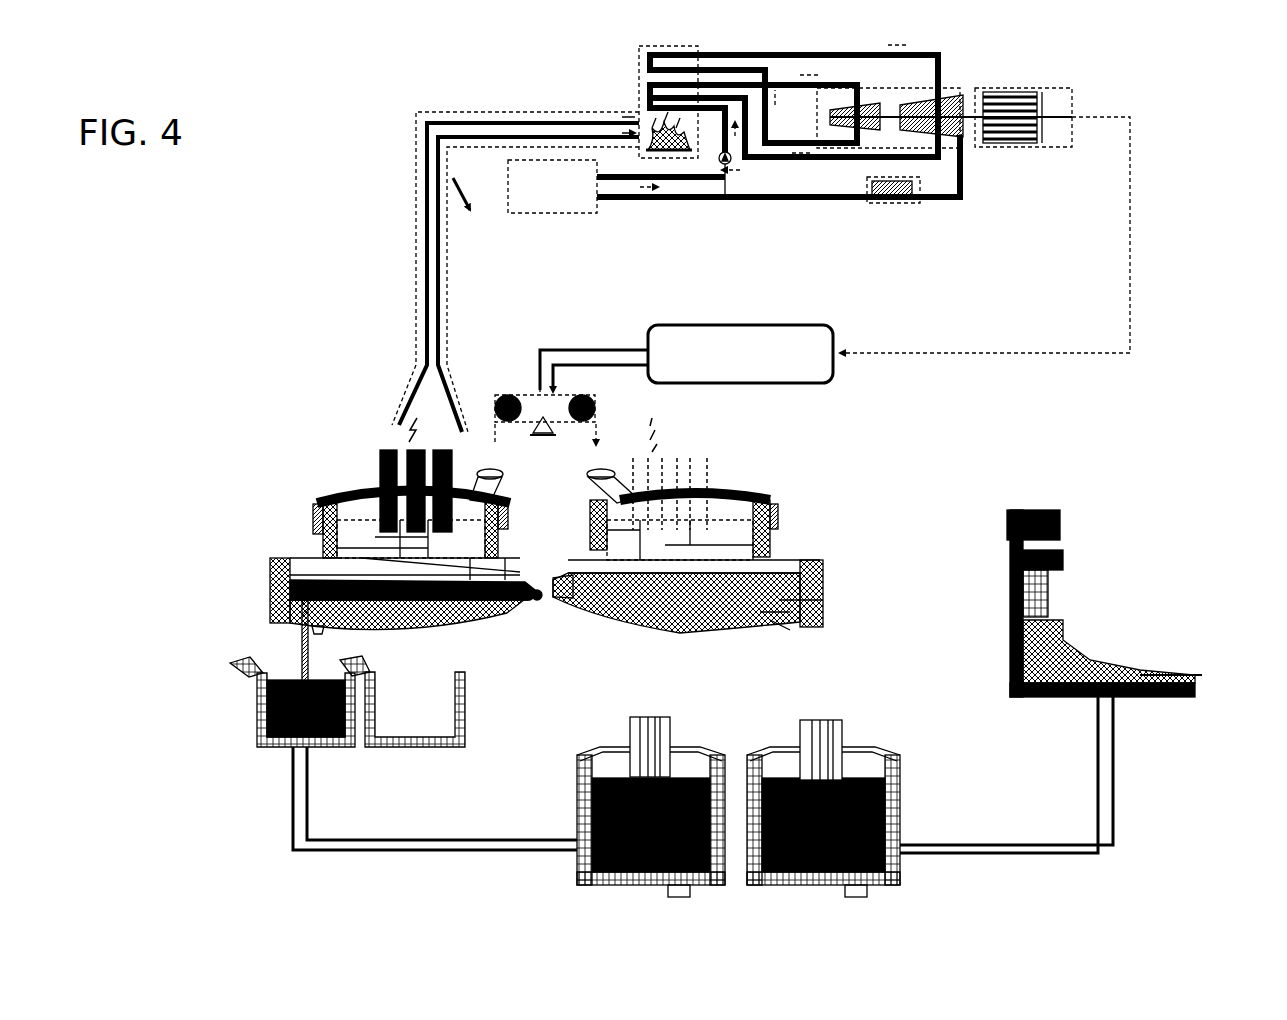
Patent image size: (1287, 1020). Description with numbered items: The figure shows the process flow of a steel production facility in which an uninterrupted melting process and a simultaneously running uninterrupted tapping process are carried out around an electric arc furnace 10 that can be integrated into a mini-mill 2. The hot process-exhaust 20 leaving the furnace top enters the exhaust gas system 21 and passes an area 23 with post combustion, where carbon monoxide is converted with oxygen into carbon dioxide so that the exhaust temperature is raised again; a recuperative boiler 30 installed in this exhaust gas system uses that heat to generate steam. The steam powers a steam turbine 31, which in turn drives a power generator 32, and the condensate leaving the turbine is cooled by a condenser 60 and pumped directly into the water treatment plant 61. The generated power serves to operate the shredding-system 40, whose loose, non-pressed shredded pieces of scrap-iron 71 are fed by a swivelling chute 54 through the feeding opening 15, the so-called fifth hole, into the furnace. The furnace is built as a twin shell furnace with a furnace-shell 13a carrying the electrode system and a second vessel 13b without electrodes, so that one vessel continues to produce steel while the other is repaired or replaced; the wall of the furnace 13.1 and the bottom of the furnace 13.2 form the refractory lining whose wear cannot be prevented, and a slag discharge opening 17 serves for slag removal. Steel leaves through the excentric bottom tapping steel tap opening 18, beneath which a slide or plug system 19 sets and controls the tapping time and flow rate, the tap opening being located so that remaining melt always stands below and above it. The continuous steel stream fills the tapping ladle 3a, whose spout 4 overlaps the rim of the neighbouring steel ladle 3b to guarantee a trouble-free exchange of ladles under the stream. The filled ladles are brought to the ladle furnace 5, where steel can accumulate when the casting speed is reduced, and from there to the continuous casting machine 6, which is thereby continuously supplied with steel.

The mini-mill 2 is at (1225, 533).
The tapping ladle 3a is at (338, 748).
The neighbouring steel ladle 3b is at (428, 748).
The spout of steel ladle 4 is at (240, 665).
The ladle furnace 5 is at (712, 757).
The continuous casting machine 6 is at (1044, 590).
The electric arc furnace 10 is at (200, 500).
The furnace-shell 13a is at (322, 540).
The second furnace vessel 13b is at (778, 535).
The wall of the furnace 13.1 is at (270, 580).
The bottom of the furnace 13.2 is at (493, 620).
The feeding opening 15 is at (505, 483).
The slag discharge opening 17 is at (542, 604).
The steel tap opening 18 is at (270, 615).
The slide or plug system 19 is at (318, 630).
The hot process-exhaust 20 is at (541, 130).
The exhaust gas system 21 is at (467, 211).
The area of the exhaust gas system with post combustion 23 is at (688, 133).
The recuperative boiler 30 is at (638, 78).
The steam turbine 31 is at (914, 112).
The power generator 32 is at (1006, 144).
The shredding-system 40 is at (740, 338).
The swivelling chute 54 is at (506, 392).
The condenser 60 is at (886, 204).
The water treatment plant 61 is at (547, 203).
The shredded pieces of scrap-iron 71 is at (585, 349).